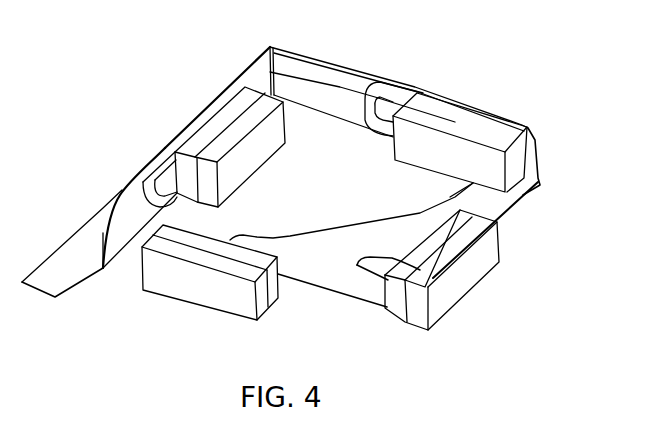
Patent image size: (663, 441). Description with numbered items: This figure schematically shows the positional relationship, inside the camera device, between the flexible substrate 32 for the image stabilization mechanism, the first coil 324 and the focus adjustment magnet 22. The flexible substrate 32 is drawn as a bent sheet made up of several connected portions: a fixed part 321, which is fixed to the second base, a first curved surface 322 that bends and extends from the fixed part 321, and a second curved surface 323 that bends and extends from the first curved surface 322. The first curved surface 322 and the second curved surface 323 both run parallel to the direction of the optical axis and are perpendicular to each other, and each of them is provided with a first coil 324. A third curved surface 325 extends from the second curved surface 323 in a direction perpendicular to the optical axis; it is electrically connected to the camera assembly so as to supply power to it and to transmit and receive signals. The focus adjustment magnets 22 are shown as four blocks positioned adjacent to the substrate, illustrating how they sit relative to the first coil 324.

The flexible substrate for the image stabilization mechanism 32 is at (63, 15).
The fixed part 321 is at (82, 242).
The first curved surface 322 is at (127, 235).
The second curved surface 323 is at (268, 46).
The first coil 324 is at (270, 72).
The third curved surface 325 is at (468, 195).
The focus adjustment magnet 22 is at (455, 122).